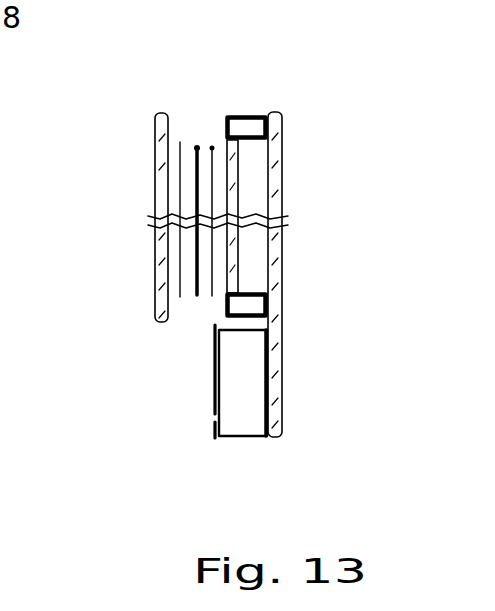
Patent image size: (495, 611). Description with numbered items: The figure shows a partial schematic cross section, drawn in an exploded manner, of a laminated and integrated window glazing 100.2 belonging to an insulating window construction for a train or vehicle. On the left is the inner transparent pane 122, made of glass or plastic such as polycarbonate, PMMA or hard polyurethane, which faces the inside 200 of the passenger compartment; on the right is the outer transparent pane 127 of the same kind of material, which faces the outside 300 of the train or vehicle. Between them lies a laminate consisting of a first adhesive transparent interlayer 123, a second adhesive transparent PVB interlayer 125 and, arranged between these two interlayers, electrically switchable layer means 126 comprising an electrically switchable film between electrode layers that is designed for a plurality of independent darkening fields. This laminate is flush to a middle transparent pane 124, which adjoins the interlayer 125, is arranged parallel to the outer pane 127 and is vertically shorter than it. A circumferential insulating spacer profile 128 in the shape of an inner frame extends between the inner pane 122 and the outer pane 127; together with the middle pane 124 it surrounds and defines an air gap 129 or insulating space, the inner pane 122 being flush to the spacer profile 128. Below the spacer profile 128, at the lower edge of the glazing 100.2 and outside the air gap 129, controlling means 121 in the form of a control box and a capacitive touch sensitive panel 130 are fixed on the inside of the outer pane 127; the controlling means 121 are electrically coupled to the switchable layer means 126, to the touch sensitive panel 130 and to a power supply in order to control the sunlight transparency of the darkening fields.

The laminated and integrated window glazing 100.2 is at (118, 448).
The controlling means 121 is at (237, 428).
The inner transparent pane 122 is at (153, 295).
The first transparent interlayer 123 is at (182, 252).
The middle transparent pane 124 is at (232, 273).
The second adhesive transparent PVB interlayer 125 is at (212, 146).
The electrically switchable layer means 126 is at (197, 147).
The outer transparent pane 127 is at (279, 423).
The circumferential insulating spacer profile 128 is at (250, 113).
The air gap 129 is at (250, 204).
The capacitive touch sensitive panel 130 is at (214, 368).
The inside 200 is at (136, 175).
The outside 300 is at (378, 175).